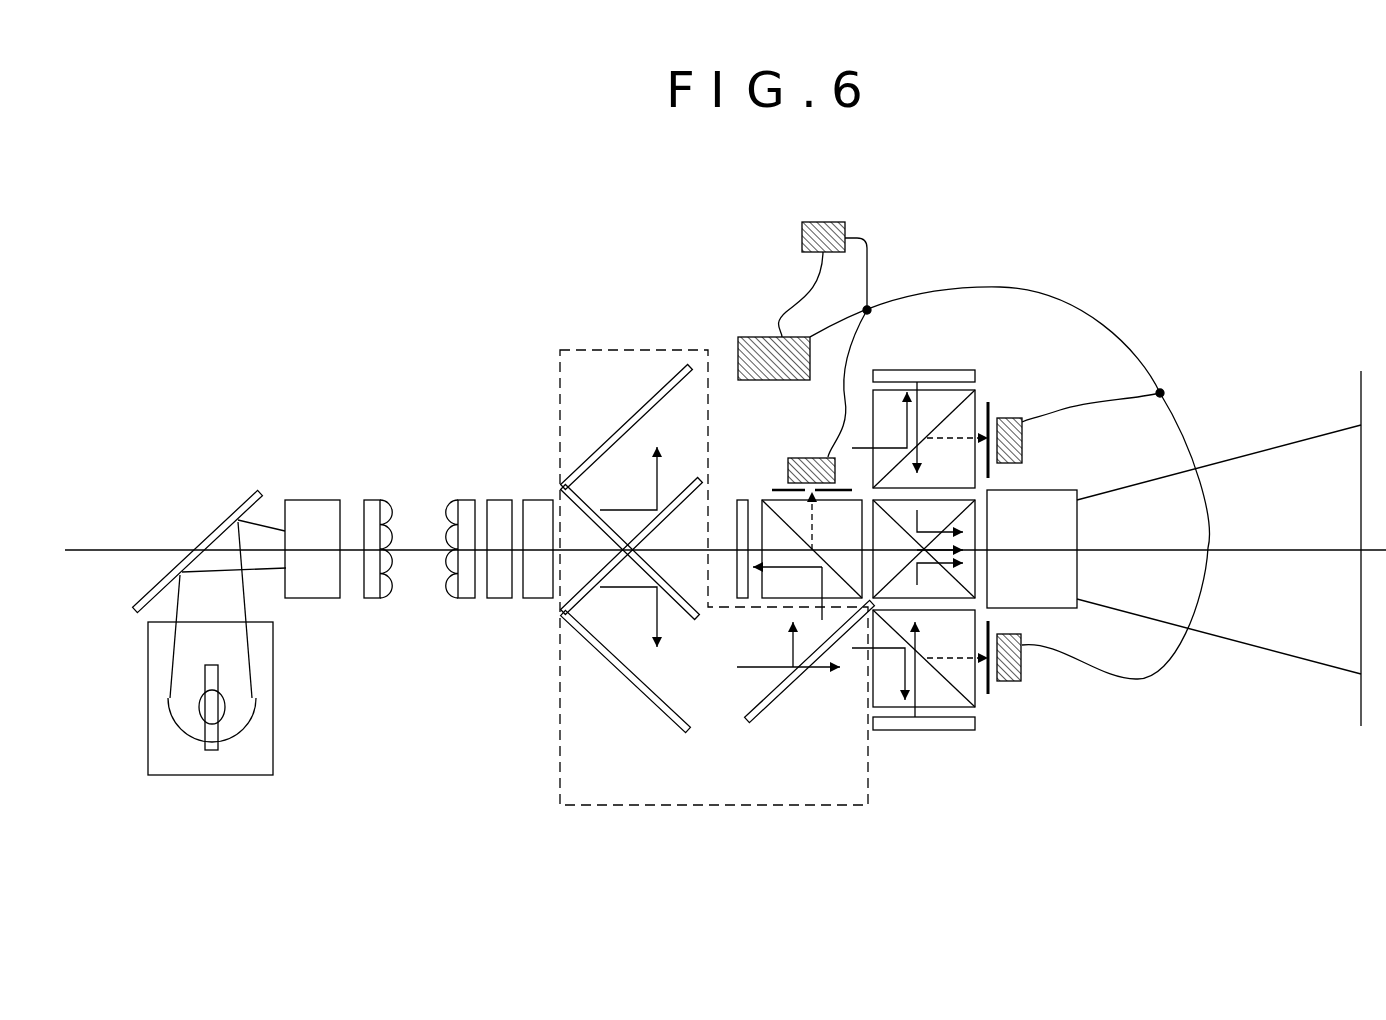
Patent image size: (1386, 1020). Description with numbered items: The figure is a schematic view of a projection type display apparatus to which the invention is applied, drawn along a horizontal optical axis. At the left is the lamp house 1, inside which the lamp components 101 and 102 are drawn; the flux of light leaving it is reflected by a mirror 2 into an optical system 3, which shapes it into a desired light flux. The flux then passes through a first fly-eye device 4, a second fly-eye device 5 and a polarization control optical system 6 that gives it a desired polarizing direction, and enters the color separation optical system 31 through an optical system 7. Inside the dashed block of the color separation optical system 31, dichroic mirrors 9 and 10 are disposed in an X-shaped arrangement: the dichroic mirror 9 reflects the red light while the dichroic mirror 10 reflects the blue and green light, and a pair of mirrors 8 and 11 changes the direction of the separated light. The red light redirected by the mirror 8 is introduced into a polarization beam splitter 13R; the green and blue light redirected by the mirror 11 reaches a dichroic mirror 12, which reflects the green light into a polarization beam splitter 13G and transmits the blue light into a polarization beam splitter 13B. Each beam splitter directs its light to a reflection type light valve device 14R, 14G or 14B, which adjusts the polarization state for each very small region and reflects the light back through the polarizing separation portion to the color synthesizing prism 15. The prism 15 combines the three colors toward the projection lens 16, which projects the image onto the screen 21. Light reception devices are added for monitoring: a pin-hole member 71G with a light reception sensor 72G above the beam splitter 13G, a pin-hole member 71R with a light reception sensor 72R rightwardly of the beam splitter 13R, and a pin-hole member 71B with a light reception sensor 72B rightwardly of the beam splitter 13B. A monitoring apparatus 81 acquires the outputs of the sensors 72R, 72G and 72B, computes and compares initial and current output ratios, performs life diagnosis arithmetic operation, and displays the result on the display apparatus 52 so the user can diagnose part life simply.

The lamp house 1 is at (148, 665).
The lamp 101 is at (200, 707).
The reflector 102 is at (245, 735).
The mirror 2 is at (242, 501).
The optical system 3 is at (312, 500).
The first fly-eye device 4 is at (371, 500).
The second fly-eye device 5 is at (467, 500).
The polarization control optical system 6 is at (500, 500).
The optical system 7 is at (538, 500).
The mirror 8 is at (630, 418).
The dichroic mirror 9 is at (683, 490).
The dichroic mirror 10 is at (683, 612).
The mirror 11 is at (615, 668).
The dichroic mirror 12 is at (788, 690).
The polarization beam splitter 13G is at (782, 602).
The polarization beam splitter 13R is at (987, 398).
The polarization beam splitter 13B is at (977, 712).
The reflection type light valve device 14G is at (742, 500).
The reflection type light valve device 14R is at (930, 370).
The reflection type light valve device 14B is at (930, 732).
The color synthesizing prism 15 is at (993, 493).
The projection lens 16 is at (1077, 525).
The screen 21 is at (1361, 392).
The color separation optical system 31 is at (660, 808).
The display apparatus 52 is at (757, 337).
The monitoring apparatus 81 is at (823, 222).
The pin-hole member 71G is at (782, 488).
The pin-hole member 71R is at (993, 408).
The pin-hole member 71B is at (992, 694).
The light reception sensor 72G is at (812, 458).
The light reception sensor 72R is at (1022, 437).
The light reception sensor 72B is at (1022, 665).